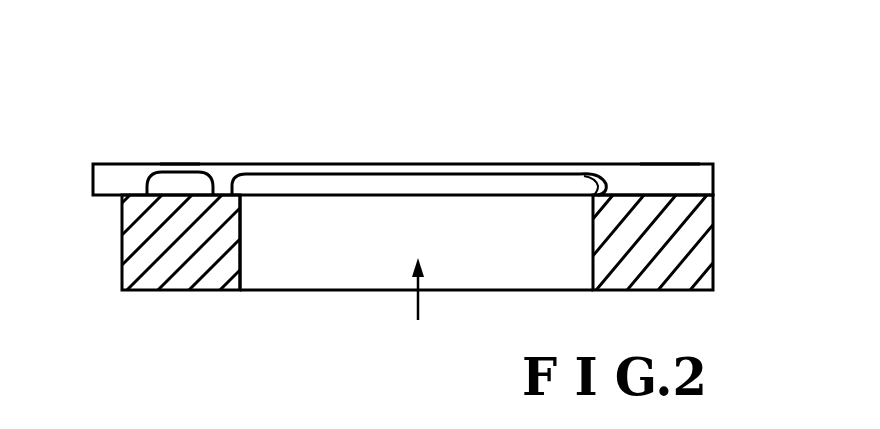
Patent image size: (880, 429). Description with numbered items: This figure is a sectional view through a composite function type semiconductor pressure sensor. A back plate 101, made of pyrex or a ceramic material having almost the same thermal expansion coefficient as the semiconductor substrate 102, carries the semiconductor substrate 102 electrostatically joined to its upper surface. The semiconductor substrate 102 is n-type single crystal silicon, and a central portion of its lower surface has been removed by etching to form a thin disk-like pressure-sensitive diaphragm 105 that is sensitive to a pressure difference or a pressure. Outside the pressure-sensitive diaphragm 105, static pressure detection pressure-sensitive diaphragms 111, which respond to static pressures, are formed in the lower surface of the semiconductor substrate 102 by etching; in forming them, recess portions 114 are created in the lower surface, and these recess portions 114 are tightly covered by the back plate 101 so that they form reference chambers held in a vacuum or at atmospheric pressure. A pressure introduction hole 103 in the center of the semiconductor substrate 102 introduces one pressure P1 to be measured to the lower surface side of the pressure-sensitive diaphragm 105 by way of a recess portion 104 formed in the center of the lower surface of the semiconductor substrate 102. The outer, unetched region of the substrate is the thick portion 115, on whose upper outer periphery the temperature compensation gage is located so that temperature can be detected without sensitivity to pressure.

The back plate 101 is at (794, 225).
The semiconductor substrate 102 is at (793, 151).
The pressure introduction hole 103 is at (241, 242).
The recess portion 104 is at (578, 167).
The pressure-sensitive diaphragm 105 is at (428, 168).
The static pressure detection pressure-sensitive diaphragm 111 is at (185, 167).
The recess portion 114 is at (165, 180).
The thick portion 115 is at (665, 180).
The pressure to be measured P1 is at (426, 308).